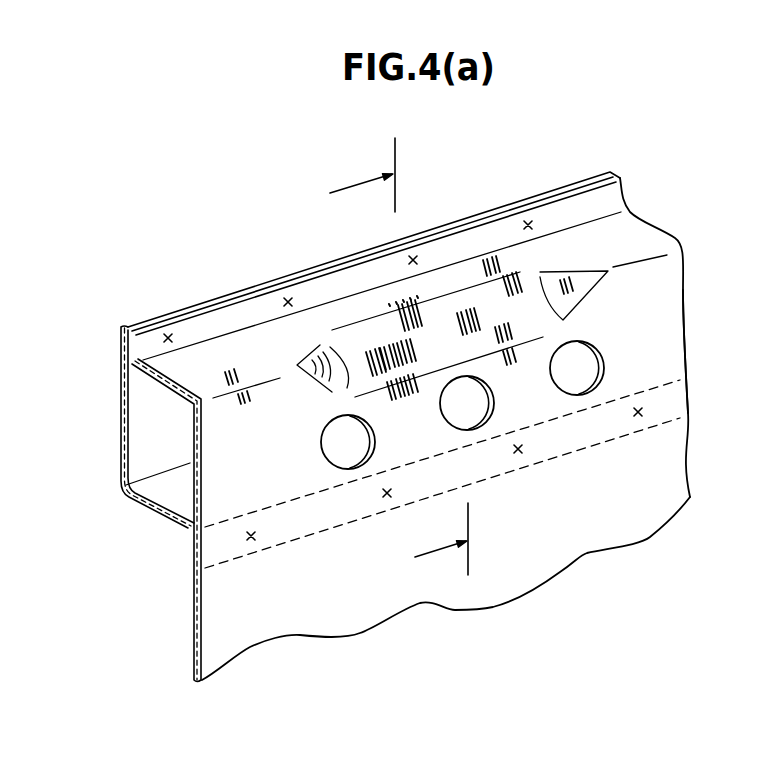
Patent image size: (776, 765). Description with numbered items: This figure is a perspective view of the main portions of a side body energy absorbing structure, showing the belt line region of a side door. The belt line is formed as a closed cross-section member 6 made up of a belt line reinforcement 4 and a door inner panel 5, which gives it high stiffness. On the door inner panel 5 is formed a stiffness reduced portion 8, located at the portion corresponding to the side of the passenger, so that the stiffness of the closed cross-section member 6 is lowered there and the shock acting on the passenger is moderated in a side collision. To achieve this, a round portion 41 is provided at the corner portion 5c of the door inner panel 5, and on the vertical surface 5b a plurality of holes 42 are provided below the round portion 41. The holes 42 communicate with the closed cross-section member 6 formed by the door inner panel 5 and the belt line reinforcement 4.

The belt line reinforcement 4 is at (146, 427).
The door inner panel 5 is at (409, 415).
The vertical surface 5b is at (357, 598).
The corner portion 5c is at (622, 258).
The closed cross-section member 6 is at (180, 489).
The stiffness reduced portion 8 is at (665, 318).
The round portion 41 is at (463, 316).
The holes 42 is at (365, 448).